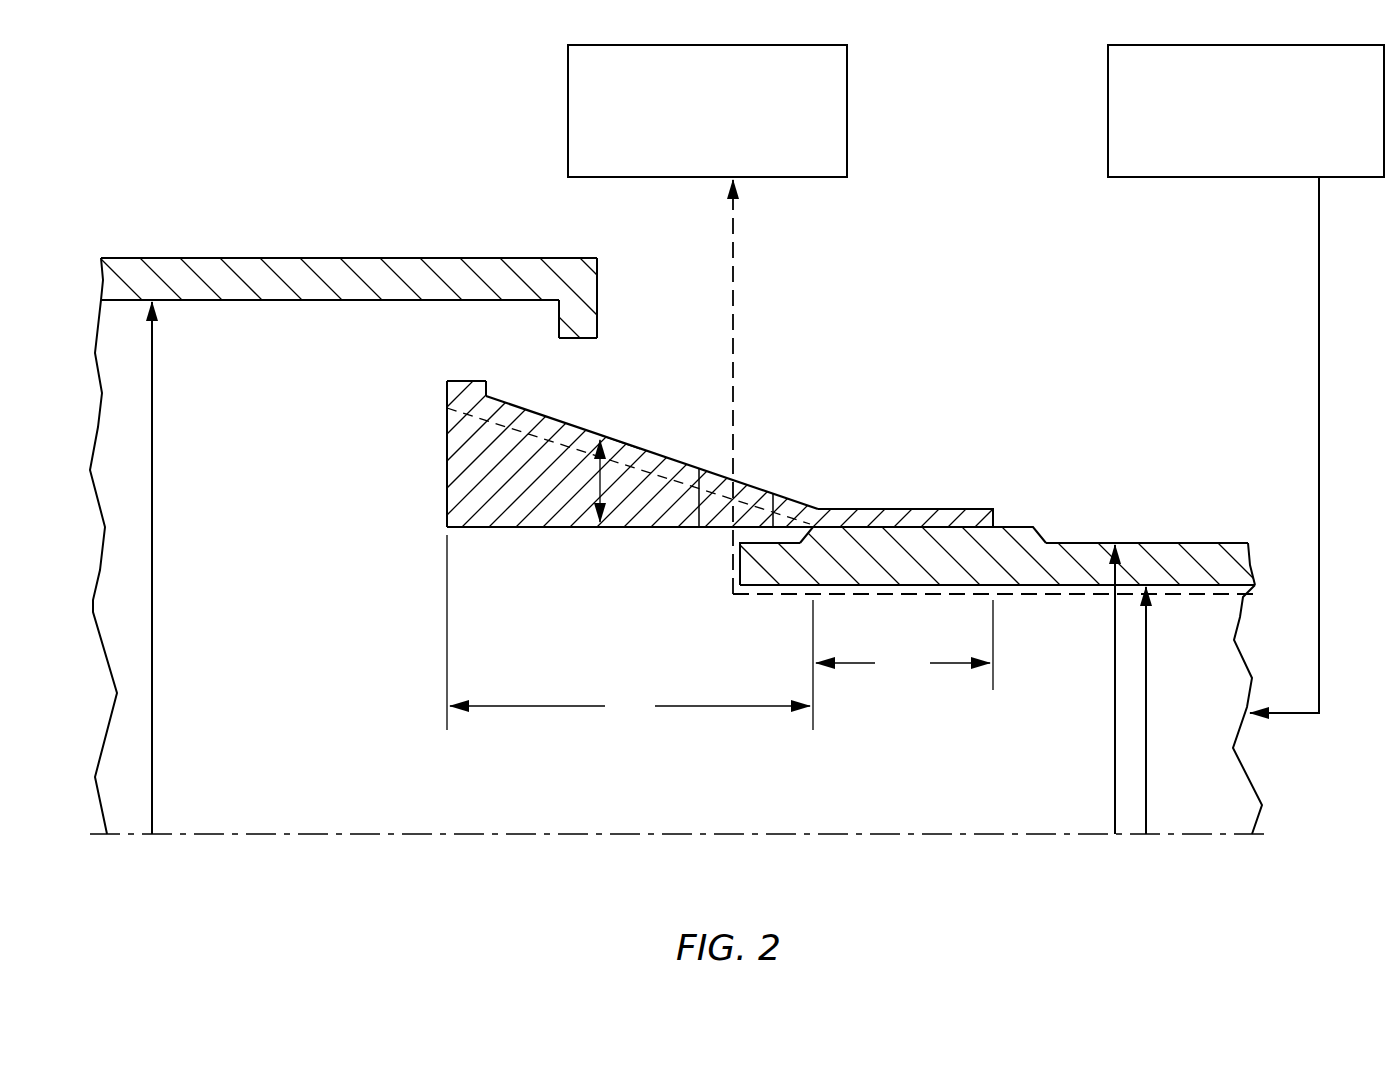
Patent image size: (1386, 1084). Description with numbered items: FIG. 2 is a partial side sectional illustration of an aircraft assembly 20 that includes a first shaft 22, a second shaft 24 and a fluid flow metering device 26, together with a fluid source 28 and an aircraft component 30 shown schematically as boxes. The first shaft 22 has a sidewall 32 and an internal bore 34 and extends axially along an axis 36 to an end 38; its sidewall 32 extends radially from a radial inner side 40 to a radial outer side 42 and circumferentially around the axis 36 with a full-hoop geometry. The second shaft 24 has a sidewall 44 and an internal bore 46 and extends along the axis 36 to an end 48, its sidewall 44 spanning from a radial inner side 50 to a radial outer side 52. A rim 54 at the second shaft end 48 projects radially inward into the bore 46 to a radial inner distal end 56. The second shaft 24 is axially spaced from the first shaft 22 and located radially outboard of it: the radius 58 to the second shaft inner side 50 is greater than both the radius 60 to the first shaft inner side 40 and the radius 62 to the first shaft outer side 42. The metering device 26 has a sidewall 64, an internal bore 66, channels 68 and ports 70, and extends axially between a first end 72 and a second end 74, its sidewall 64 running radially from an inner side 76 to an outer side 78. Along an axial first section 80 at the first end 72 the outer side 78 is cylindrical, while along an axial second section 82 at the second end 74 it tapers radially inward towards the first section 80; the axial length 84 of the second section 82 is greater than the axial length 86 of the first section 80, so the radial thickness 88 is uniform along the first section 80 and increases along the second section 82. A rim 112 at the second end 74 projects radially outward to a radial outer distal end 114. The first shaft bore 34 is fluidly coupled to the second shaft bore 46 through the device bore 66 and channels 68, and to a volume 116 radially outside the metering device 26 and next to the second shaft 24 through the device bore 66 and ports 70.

The assembly 20 is at (110, 118).
The first shaft 22 is at (1236, 535).
The second shaft 24 is at (140, 250).
The fluid flow metering device 26 is at (652, 440).
The fluid source 28 is at (1232, 140).
The aircraft component 30 is at (693, 140).
The first shaft sidewall 32 is at (1237, 562).
The first shaft internal bore 34 is at (1080, 771).
The axis 36 is at (120, 838).
The first shaft end 38 is at (740, 562).
The first shaft sidewall radial inner side 40 is at (1208, 586).
The first shaft sidewall radial outer side 42 is at (1190, 541).
The second shaft sidewall 44 is at (120, 279).
The second shaft internal bore 46 is at (220, 503).
The second shaft end 48 is at (597, 276).
The second shaft sidewall radial inner side 50 is at (205, 300).
The second shaft sidewall radial outer side 52 is at (204, 258).
The second shaft rim 54 is at (578, 316).
The radial inner distal end of second shaft rim 56 is at (578, 338).
The radius to second shaft sidewall inner side 58 is at (152, 805).
The radius to first shaft sidewall inner side 60 is at (1146, 810).
The radius to first shaft sidewall outer side 62 is at (1115, 810).
The device sidewall 64 is at (466, 492).
The device internal bore 66 is at (576, 648).
The channels 68 is at (548, 414).
The ports 70 is at (752, 496).
The device first end 72 is at (993, 514).
The device second end 74 is at (447, 392).
The device sidewall radial inner side 76 is at (480, 528).
The device sidewall radial outer side 78 is at (598, 434).
The axial first section 80 is at (905, 500).
The axial second section 82 is at (542, 491).
The axial length of second section 84 is at (630, 632).
The axial length of first section 86 is at (904, 645).
The device sidewall radial thickness 88 is at (600, 522).
The device rim 112 is at (470, 389).
The radial outer distal end of device rim 114 is at (476, 381).
The volume 116 is at (713, 335).